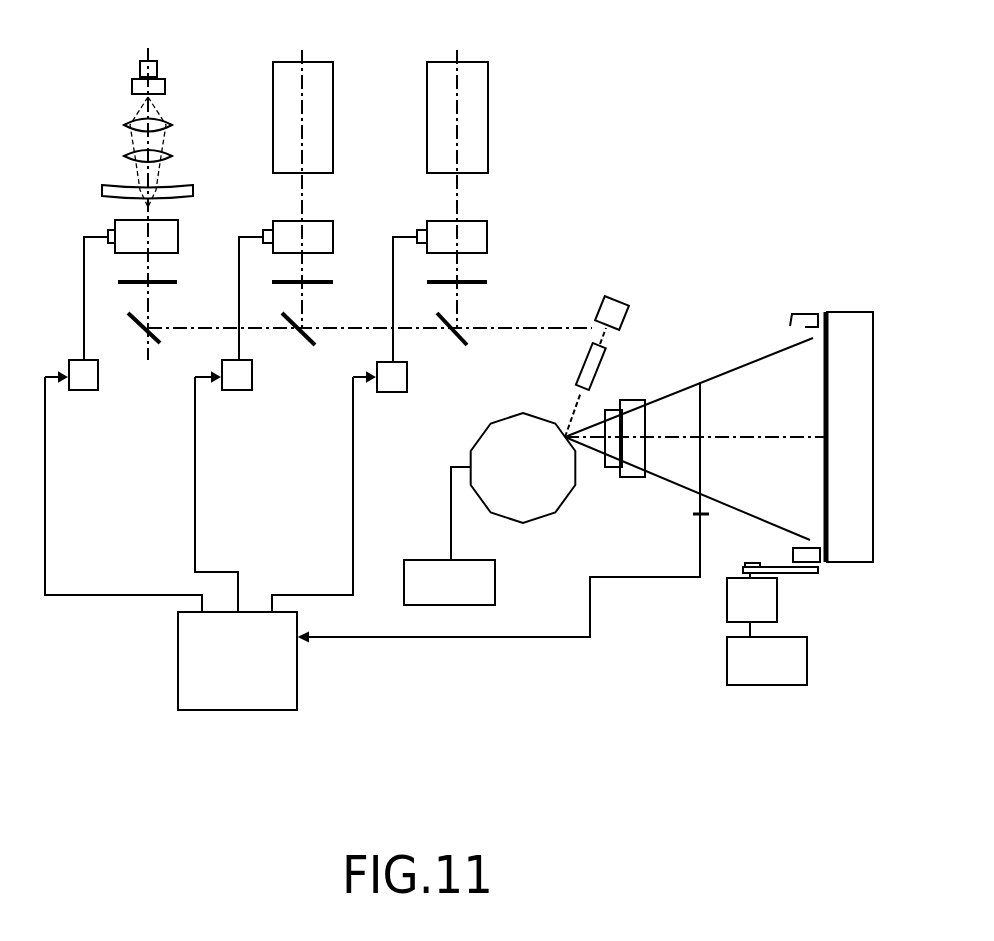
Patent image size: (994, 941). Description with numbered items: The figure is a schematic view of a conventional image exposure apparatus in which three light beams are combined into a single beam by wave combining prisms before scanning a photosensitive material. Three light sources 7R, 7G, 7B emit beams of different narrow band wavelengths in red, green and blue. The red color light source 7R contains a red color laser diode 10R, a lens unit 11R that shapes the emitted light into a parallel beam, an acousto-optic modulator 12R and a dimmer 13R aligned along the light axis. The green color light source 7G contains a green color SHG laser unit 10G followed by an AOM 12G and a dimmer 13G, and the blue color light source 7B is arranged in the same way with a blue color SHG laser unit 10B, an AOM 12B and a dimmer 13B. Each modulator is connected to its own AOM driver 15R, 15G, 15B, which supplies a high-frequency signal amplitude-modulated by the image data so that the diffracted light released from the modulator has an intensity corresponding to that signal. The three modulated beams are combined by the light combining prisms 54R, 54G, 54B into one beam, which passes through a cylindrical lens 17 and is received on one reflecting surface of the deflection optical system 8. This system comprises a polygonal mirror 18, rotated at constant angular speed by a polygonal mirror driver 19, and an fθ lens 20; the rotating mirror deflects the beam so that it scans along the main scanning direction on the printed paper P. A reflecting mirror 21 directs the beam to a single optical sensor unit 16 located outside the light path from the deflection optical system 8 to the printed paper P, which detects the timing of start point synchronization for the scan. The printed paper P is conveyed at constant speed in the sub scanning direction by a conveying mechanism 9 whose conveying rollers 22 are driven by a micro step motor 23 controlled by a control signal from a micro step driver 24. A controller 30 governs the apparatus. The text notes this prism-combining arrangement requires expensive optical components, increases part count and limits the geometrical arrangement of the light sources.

The red color light source 7R is at (174, 56).
The green color light source 7G is at (345, 57).
The blue color light source 7B is at (500, 57).
The red color laser diode 10R is at (140, 68).
The green color SHG laser unit 10G is at (273, 86).
The blue color SHG laser unit 10B is at (427, 86).
The lens unit 11R is at (102, 113).
The acousto-optic modulator 12R is at (122, 228).
The acousto-optic modulator 12G is at (286, 228).
The acousto-optic modulator 12B is at (440, 228).
The dimmer 13R is at (137, 280).
The dimmer 13G is at (292, 280).
The dimmer 13B is at (446, 280).
The AOM driver 15R is at (84, 390).
The AOM driver 15G is at (237, 390).
The AOM driver 15B is at (392, 392).
The light combining prism 54R is at (140, 337).
The light combining prism 54G is at (292, 340).
The light combining prism 54B is at (447, 340).
The deflection optical system 8 is at (631, 262).
The cylindrical lens 17 is at (599, 373).
The polygonal mirror 18 is at (493, 440).
The polygonal mirror driver 19 is at (430, 560).
The fθ lens 20 is at (631, 477).
The reflecting mirror 21 is at (701, 380).
The optical sensor unit 16 is at (695, 516).
The printed paper P is at (824, 367).
The conveying rollers 22 is at (836, 558).
The micro step motor 23 is at (727, 608).
The micro step driver 24 is at (727, 670).
The controller 30 is at (297, 660).
The conveying mechanism 9 is at (872, 653).